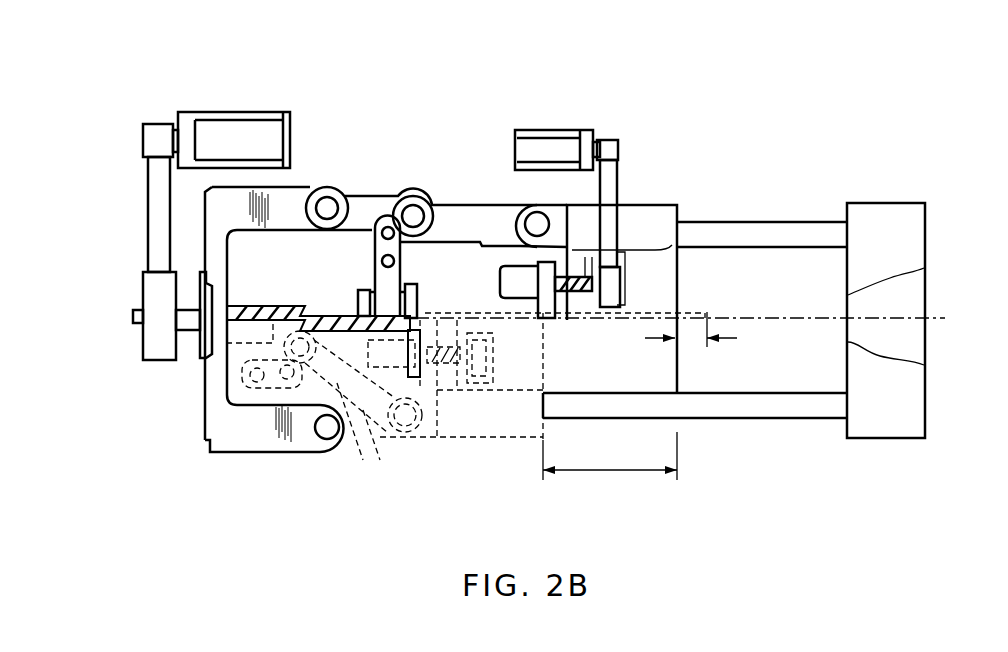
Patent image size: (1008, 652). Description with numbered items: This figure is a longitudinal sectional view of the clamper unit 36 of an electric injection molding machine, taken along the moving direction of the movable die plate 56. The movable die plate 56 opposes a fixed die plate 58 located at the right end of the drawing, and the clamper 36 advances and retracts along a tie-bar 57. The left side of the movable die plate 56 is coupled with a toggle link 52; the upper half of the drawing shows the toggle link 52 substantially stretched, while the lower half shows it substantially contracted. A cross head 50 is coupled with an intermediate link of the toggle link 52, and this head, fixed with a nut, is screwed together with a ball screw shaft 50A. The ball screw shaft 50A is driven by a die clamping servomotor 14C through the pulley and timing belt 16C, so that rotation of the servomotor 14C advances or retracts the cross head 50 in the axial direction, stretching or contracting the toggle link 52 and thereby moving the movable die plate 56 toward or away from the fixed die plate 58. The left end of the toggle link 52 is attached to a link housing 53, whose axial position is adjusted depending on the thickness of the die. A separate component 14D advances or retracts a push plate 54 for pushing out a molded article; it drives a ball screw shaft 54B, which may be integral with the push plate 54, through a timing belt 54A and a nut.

The clamper unit 36 is at (742, 80).
The die clamping servomotor 14C is at (244, 112).
The component for advancing or retracting a push plate 14D is at (552, 130).
The pulley and timing belt 16C is at (147, 224).
The cross head 50 is at (372, 292).
The ball screw shaft 50A is at (270, 306).
The toggle link 52 is at (449, 205).
The link housing 53 is at (243, 453).
The push plate 54 is at (506, 270).
The timing belt 54A is at (607, 186).
The ball screw shaft 54B is at (575, 302).
The movable die plate 56 is at (662, 205).
The tie-bar 57 is at (745, 420).
The fixed die plate 58 is at (891, 203).